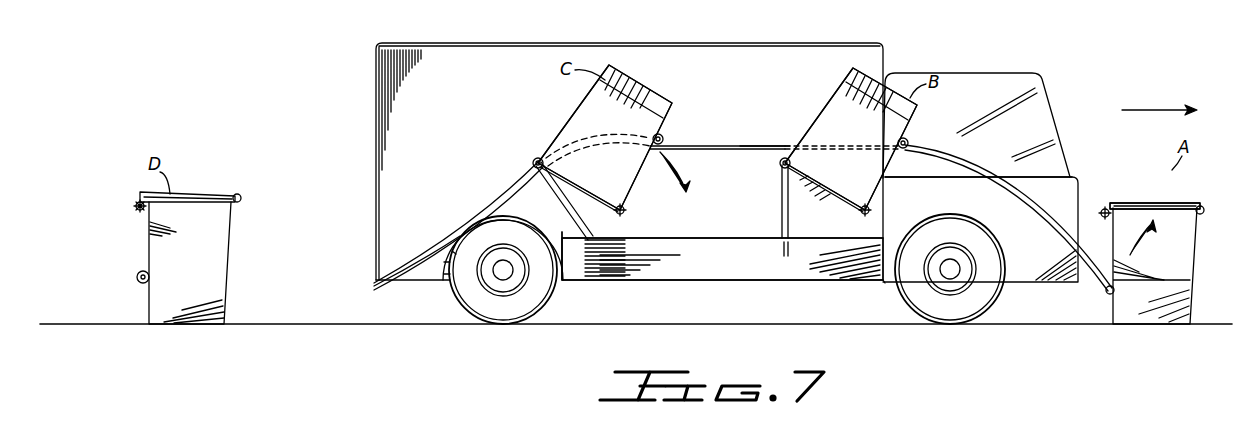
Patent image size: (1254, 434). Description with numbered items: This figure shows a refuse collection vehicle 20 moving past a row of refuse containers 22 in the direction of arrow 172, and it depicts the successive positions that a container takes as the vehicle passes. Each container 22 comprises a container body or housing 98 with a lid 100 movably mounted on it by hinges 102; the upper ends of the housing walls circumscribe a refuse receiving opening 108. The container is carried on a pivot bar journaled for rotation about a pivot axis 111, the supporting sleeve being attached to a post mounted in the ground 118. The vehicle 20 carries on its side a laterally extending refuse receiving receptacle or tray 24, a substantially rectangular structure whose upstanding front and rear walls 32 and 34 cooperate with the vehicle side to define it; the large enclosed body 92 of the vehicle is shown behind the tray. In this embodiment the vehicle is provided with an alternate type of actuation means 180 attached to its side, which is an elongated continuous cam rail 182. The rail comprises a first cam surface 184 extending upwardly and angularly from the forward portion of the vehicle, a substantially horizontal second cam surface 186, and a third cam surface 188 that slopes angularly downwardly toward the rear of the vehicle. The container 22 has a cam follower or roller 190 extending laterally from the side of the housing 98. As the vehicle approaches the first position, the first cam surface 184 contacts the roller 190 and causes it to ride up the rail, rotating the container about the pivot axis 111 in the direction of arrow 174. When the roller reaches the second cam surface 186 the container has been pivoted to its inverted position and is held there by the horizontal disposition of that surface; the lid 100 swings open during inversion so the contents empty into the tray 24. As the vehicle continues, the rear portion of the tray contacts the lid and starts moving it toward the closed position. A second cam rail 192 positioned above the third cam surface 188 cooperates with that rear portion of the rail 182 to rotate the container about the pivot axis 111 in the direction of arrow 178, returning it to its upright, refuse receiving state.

The vehicle 20 is at (1062, 96).
The refuse container 22 is at (584, 98).
The refuse receiving receptacle or tray 24 is at (781, 286).
The front wall 32 is at (884, 280).
The rear wall 34 is at (565, 280).
The refuse receiving body 92 is at (376, 84).
The container body or housing 98 is at (224, 222).
The lid 100 is at (182, 196).
The hinges 102 is at (238, 198).
The refuse receiving opening 108 is at (600, 206).
The pivot axis 111 is at (134, 206).
The ground 118 is at (1044, 315).
The arrow 172 is at (1166, 102).
The arrow 174 is at (1140, 258).
The arrow 178 is at (653, 156).
The actuation means 180 is at (1004, 162).
The cam rail 182 is at (701, 143).
The first cam surface 184 is at (1060, 210).
The second cam surface 186 is at (778, 145).
The third cam surface 188 is at (476, 218).
The cam follower or roller 190 is at (136, 272).
The second cam rail 192 is at (431, 249).